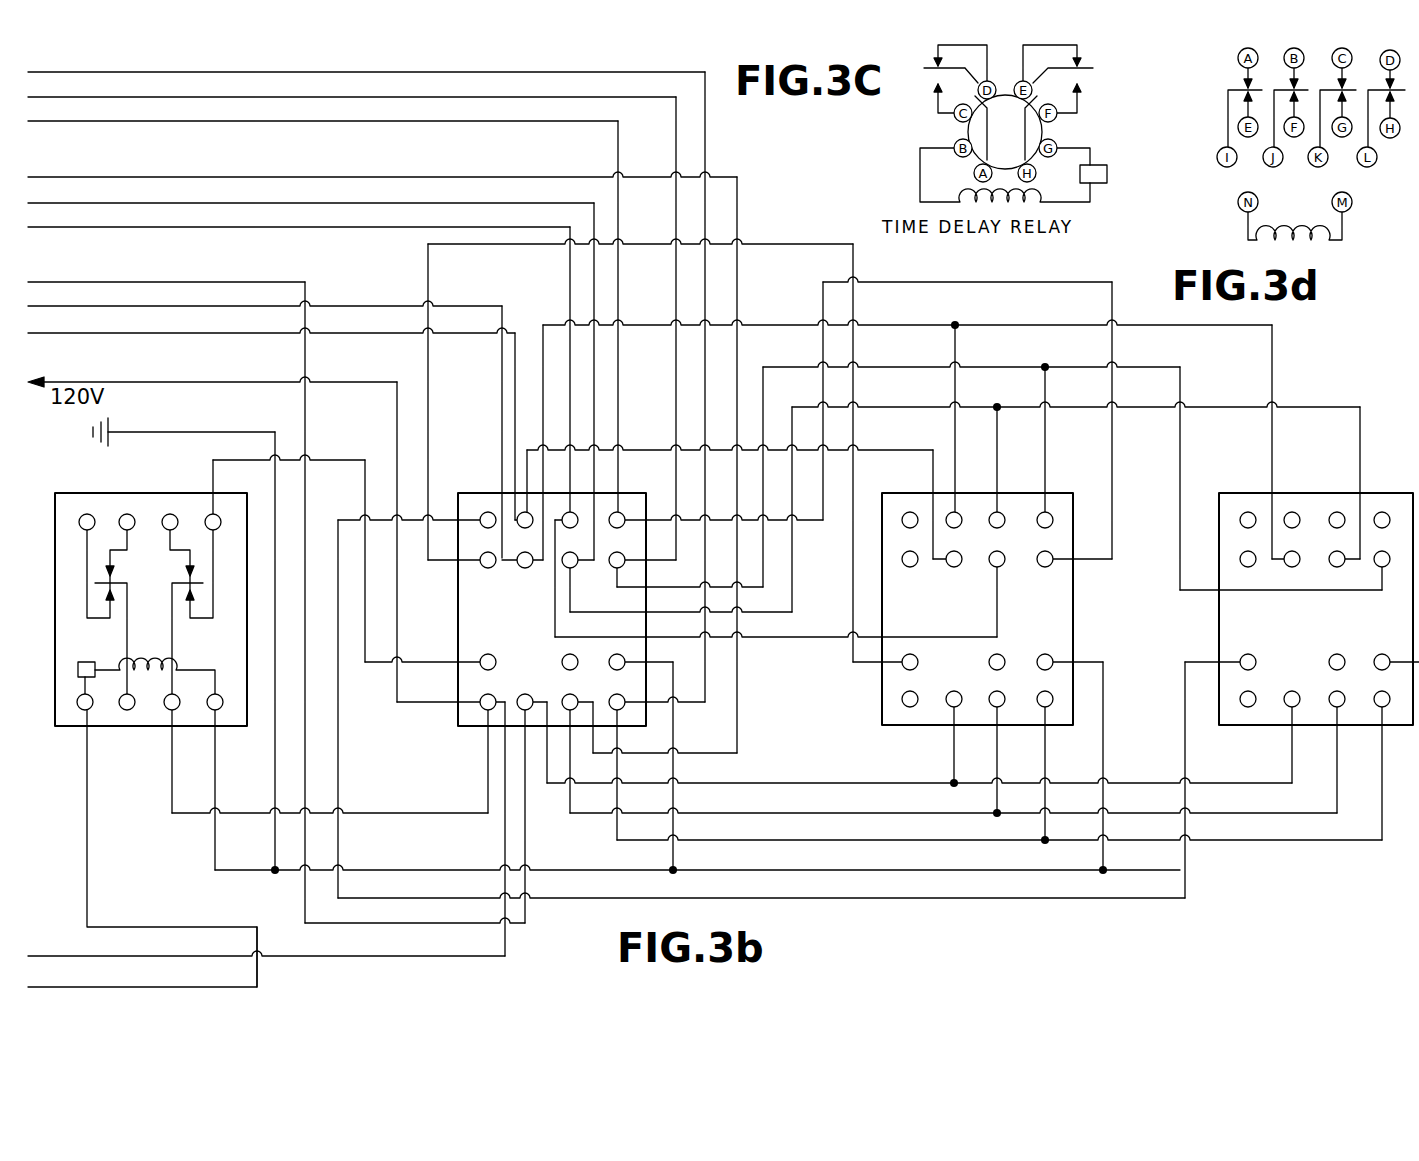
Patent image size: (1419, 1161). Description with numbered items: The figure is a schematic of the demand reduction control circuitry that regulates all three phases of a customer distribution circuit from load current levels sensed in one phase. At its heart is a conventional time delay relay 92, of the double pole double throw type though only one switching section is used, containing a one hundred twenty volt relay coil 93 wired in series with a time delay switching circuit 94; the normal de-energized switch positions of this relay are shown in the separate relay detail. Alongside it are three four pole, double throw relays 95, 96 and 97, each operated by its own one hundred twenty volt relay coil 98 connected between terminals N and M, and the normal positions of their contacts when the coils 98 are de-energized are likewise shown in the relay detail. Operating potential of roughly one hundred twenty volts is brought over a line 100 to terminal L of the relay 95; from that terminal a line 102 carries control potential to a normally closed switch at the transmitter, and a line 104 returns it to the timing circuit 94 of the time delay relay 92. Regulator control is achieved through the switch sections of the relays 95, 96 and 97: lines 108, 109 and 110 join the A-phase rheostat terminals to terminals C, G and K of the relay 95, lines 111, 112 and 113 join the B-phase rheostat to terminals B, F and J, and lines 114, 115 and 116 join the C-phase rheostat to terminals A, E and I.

In FIG. 3B, the time delay relay 92 is at (151, 646).
In FIG. 3B, the relay coil 93 is at (150, 660).
In FIG. 3C, the relay coil 93 is at (975, 196).
In FIG. 3B, the time delay switching circuit 94 is at (86, 662).
In FIG. 3C, the time delay switching circuit 94 is at (1107, 174).
In FIG. 3B, the four pole double throw relay 95 is at (458, 727).
In FIG. 3B, the four pole double throw relay 96 is at (882, 700).
In FIG. 3B, the four pole double throw relay 97 is at (1219, 632).
In FIG. 3D, the relay coil 98 is at (1288, 234).
In FIG. 3B, the line 100 is at (150, 382).
In FIG. 3B, the line 102 is at (505, 950).
In FIG. 3B, the line 104 is at (87, 890).
In FIG. 3B, the line 108 is at (98, 306).
In FIG. 3B, the line 109 is at (132, 334).
In FIG. 3B, the line 110 is at (102, 282).
In FIG. 3B, the line 111 is at (78, 203).
In FIG. 3B, the line 112 is at (106, 227).
In FIG. 3B, the line 113 is at (122, 177).
In FIG. 3B, the line 114 is at (78, 99).
In FIG. 3B, the line 115 is at (120, 124).
In FIG. 3B, the line 116 is at (62, 72).